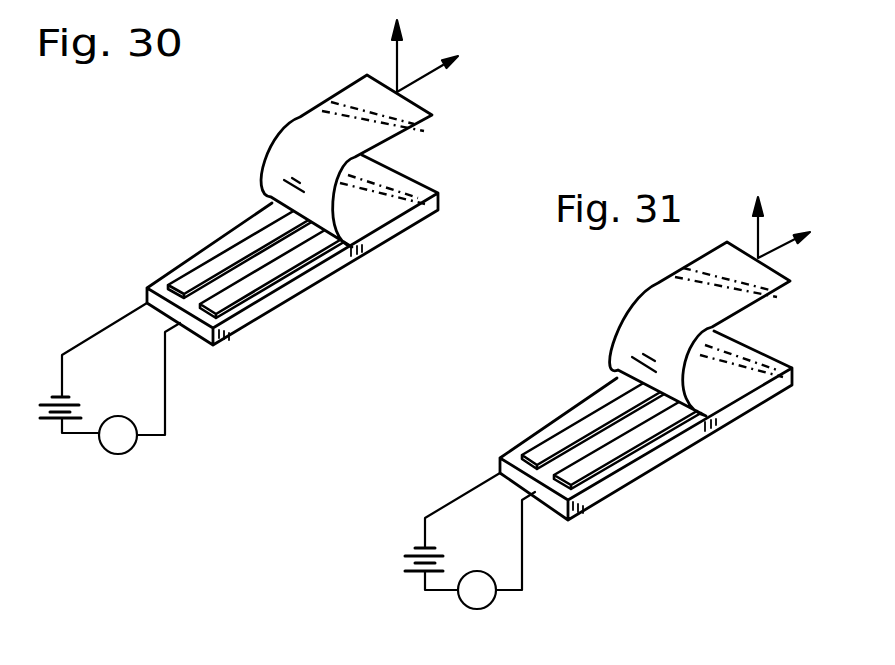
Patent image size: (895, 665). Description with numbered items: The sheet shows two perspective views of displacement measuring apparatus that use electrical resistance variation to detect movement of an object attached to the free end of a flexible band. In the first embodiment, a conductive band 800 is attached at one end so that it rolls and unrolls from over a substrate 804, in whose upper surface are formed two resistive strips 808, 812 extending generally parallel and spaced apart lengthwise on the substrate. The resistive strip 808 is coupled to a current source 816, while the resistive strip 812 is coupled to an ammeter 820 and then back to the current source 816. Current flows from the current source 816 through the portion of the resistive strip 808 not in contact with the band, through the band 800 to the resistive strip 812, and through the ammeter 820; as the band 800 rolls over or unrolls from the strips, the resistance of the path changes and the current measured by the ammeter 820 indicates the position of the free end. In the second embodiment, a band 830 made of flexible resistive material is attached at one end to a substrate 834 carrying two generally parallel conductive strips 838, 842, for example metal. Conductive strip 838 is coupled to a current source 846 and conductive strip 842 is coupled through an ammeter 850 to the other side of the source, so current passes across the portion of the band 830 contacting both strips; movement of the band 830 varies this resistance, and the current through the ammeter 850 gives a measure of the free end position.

In FIG. 30, the band 800 is at (297, 123).
In FIG. 30, the substrate 804 is at (324, 270).
In FIG. 30, the resistive strip 808 is at (202, 276).
In FIG. 30, the resistive strip 812 is at (238, 291).
In FIG. 30, the current source 816 is at (42, 405).
In FIG. 30, the ammeter 820 is at (126, 453).
In FIG. 31, the band 830 is at (657, 294).
In FIG. 31, the substrate 834 is at (678, 443).
In FIG. 31, the conductive strip 838 is at (560, 438).
In FIG. 31, the conductive strip 842 is at (597, 479).
In FIG. 31, the current source 846 is at (403, 564).
In FIG. 31, the ammeter 850 is at (491, 601).